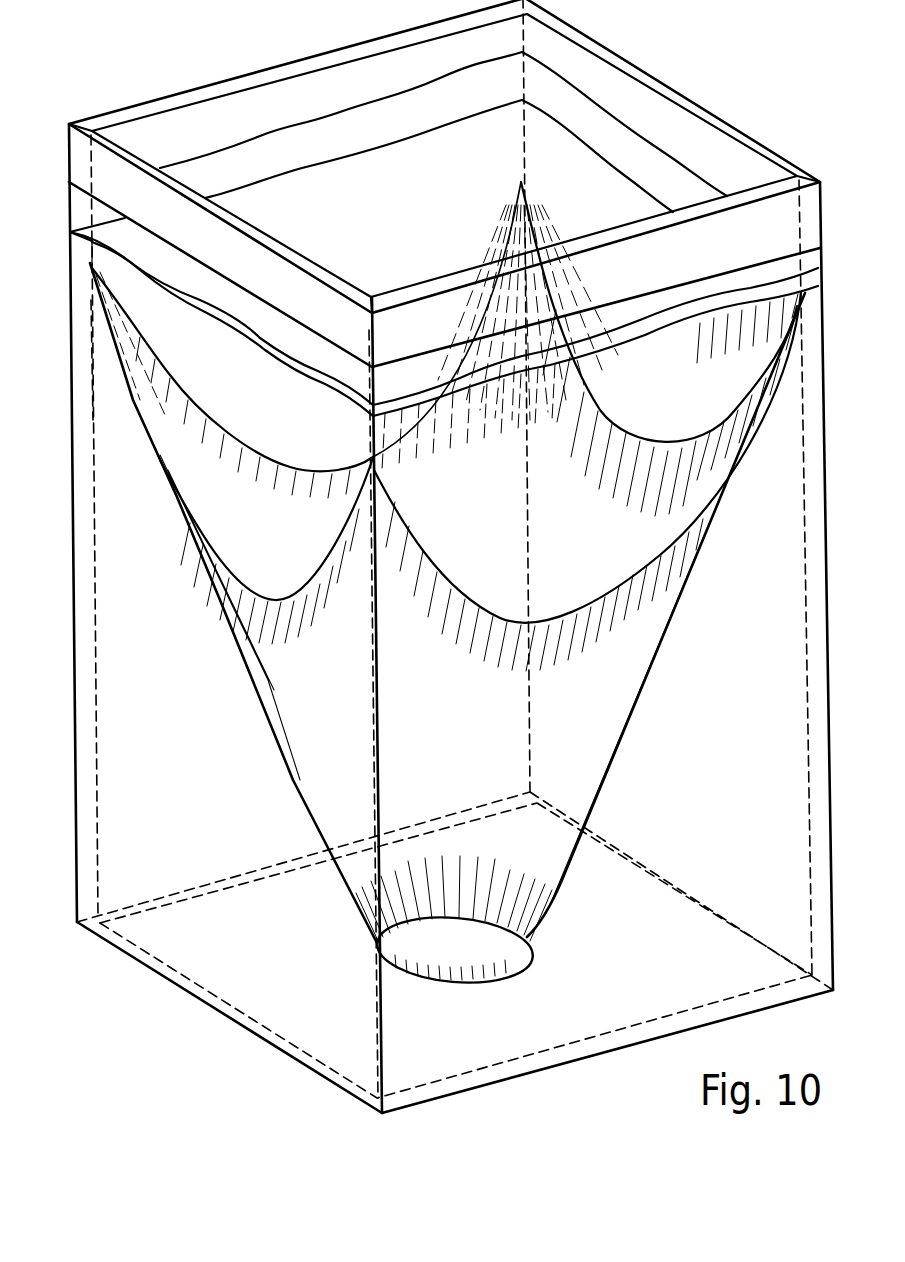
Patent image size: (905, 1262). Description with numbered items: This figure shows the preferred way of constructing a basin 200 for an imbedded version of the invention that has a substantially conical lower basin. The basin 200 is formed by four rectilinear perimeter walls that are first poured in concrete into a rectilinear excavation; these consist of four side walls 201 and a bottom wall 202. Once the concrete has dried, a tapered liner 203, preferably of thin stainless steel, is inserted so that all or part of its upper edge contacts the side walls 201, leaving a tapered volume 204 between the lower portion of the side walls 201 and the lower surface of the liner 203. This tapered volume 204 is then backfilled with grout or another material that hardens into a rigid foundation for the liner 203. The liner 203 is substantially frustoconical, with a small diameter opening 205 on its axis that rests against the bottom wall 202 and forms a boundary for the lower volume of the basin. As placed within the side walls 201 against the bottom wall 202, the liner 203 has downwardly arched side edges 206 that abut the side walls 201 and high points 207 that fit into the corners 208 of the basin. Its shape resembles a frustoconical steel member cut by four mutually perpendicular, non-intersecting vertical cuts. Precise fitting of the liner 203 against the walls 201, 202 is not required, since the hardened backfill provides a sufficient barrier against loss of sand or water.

The basin 200 is at (151, 70).
The side walls 201 is at (230, 80).
The bottom wall 202 is at (150, 975).
The tapered liner 203 is at (235, 600).
The tapered volume 204 is at (122, 744).
The small diameter opening 205 is at (470, 970).
The downwardly arched side edges 206 is at (168, 488).
The high points 207 is at (92, 263).
The corners 208 is at (97, 356).